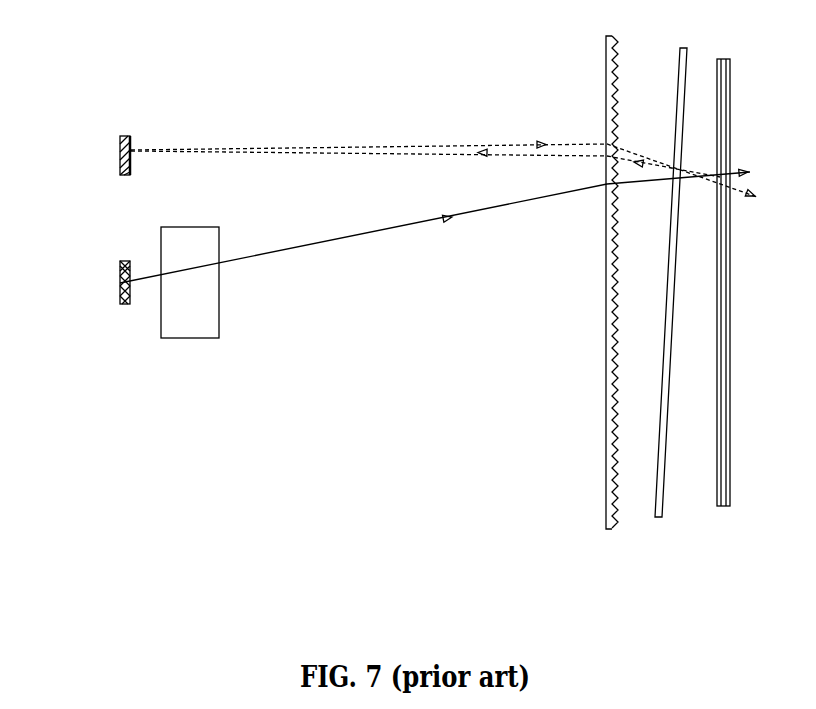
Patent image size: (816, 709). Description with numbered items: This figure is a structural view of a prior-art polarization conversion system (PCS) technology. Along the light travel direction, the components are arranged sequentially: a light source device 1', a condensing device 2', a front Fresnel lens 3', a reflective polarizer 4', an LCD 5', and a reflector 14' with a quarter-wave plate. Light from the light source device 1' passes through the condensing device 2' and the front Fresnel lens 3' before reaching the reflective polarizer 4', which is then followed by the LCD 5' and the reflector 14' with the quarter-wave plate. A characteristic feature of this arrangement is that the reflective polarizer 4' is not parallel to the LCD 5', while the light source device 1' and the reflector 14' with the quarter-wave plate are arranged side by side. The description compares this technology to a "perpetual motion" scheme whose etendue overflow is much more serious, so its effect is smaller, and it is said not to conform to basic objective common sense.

The reflector with ¼ wave plate 14' is at (85, 127).
The light source device 1' is at (90, 245).
The condensing device 2' is at (211, 330).
The front Fresnel lens 3' is at (520, 303).
The reflective polarizer 4' is at (625, 332).
The LCD 5' is at (692, 338).